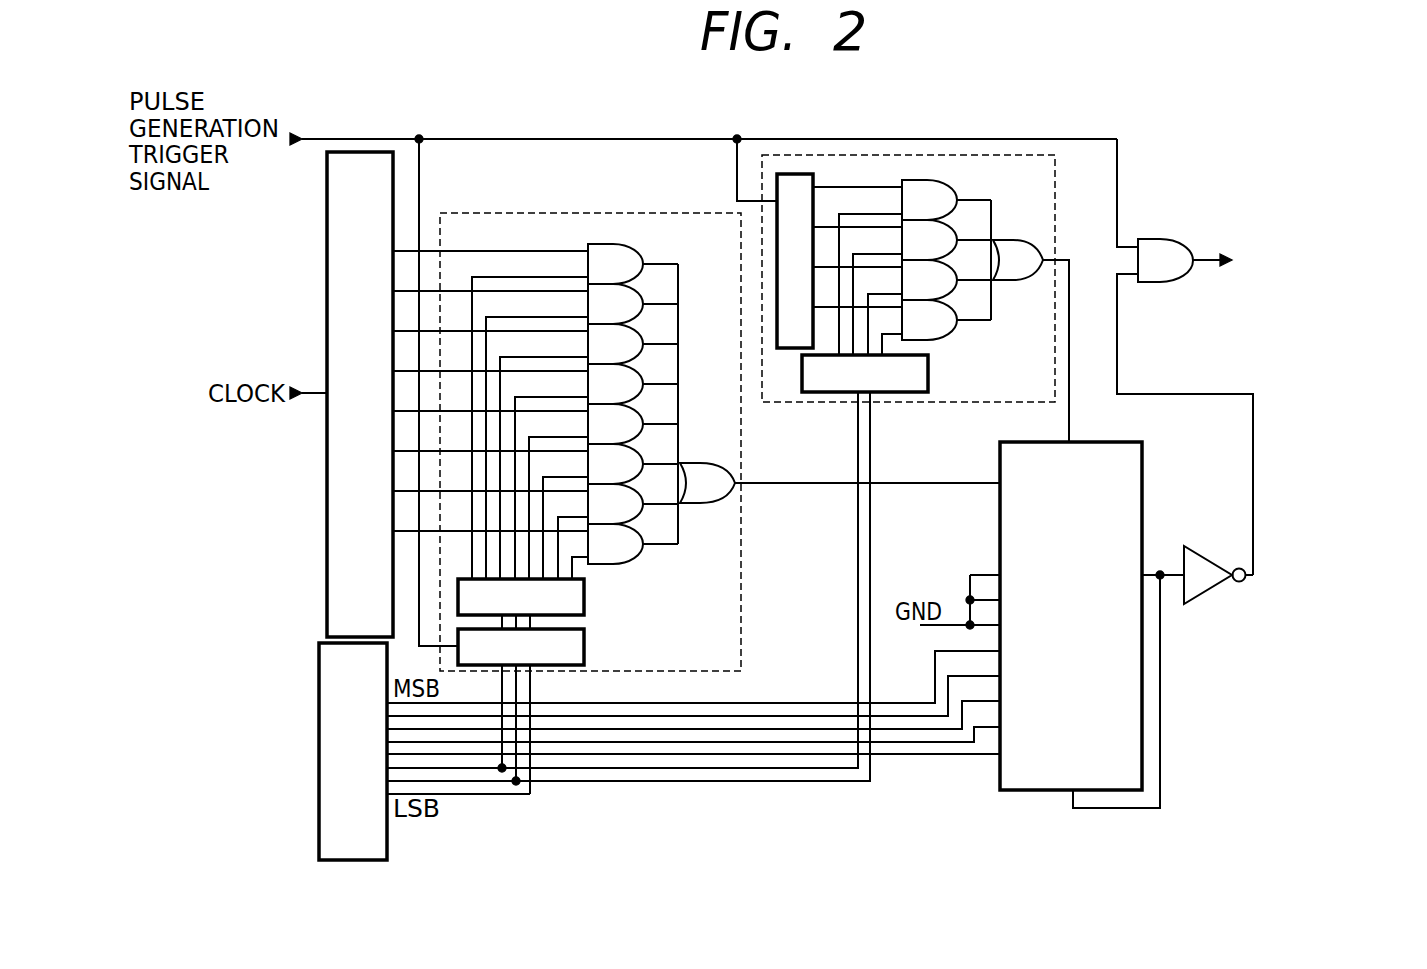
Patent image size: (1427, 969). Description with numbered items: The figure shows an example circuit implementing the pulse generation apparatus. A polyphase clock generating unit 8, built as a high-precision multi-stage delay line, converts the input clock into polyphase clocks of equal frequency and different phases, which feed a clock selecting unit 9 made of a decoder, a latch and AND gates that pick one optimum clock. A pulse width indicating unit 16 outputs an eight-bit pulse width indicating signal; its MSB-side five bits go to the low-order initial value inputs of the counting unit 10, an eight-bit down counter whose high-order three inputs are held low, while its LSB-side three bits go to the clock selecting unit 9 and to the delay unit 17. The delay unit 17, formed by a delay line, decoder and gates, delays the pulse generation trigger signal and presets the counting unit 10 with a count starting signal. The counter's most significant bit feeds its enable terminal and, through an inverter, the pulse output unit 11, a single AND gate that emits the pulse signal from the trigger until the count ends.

The polyphase clock generating unit 8 is at (327, 233).
The clock selecting unit 9 is at (496, 213).
The counting unit 10 is at (1142, 472).
The pulse output unit 11 is at (1153, 238).
The pulse width indicating unit 16 is at (319, 671).
The delay unit 17 is at (968, 404).